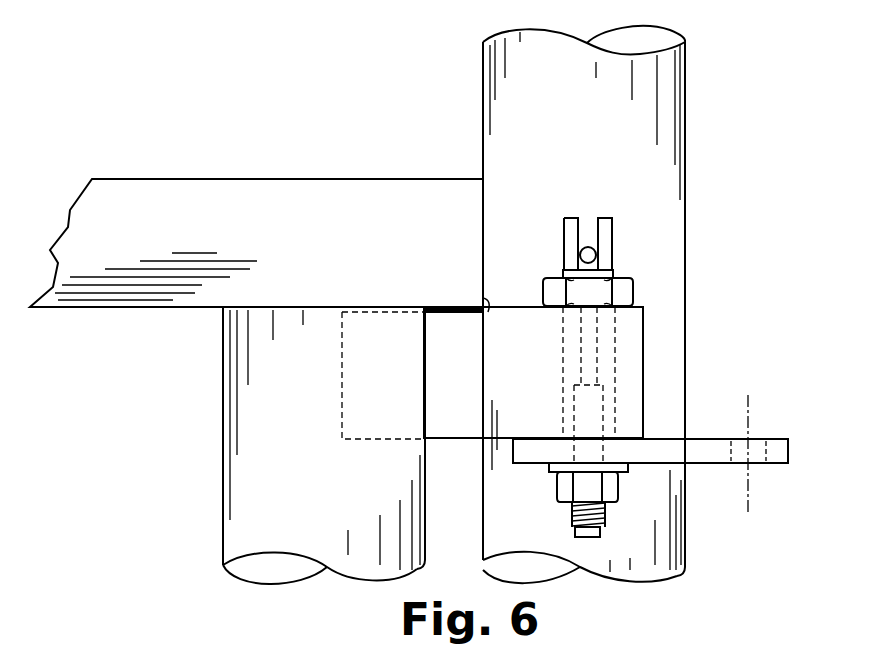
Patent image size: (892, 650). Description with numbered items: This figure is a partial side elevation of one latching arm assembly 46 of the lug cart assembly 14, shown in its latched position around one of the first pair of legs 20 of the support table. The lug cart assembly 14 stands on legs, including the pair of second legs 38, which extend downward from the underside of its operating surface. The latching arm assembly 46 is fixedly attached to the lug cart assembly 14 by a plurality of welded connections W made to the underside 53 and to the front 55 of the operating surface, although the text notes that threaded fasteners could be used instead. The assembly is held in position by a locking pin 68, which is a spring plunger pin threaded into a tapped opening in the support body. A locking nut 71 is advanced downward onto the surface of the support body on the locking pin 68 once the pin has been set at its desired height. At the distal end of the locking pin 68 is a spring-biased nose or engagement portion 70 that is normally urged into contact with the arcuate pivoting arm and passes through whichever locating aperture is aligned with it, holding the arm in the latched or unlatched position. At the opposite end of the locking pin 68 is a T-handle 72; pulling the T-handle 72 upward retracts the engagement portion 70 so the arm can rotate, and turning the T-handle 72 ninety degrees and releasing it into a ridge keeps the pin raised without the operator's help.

The lug cart assembly 14 is at (248, 179).
The first pair of legs 20 is at (686, 138).
The pair of second legs 38 is at (222, 492).
The latching arm assembly 46 is at (785, 150).
The underside of operating surface 53 is at (190, 309).
The front of operating surface 55 is at (486, 203).
The locking pin 68 is at (605, 219).
The engagement portion 70 is at (595, 480).
The locking nut 71 is at (633, 292).
The T-handle 72 is at (596, 255).
The welded connections W is at (487, 300).